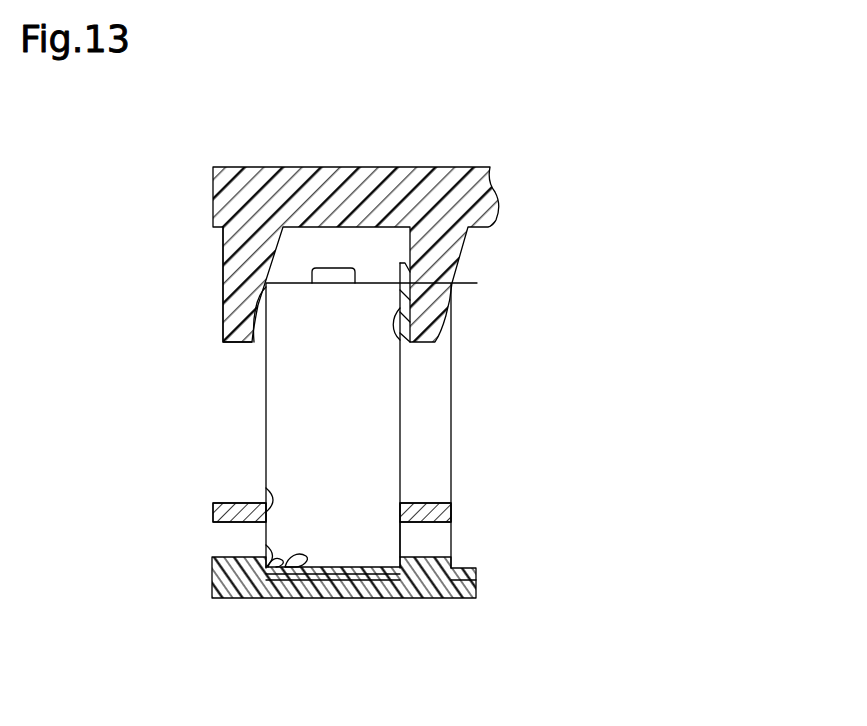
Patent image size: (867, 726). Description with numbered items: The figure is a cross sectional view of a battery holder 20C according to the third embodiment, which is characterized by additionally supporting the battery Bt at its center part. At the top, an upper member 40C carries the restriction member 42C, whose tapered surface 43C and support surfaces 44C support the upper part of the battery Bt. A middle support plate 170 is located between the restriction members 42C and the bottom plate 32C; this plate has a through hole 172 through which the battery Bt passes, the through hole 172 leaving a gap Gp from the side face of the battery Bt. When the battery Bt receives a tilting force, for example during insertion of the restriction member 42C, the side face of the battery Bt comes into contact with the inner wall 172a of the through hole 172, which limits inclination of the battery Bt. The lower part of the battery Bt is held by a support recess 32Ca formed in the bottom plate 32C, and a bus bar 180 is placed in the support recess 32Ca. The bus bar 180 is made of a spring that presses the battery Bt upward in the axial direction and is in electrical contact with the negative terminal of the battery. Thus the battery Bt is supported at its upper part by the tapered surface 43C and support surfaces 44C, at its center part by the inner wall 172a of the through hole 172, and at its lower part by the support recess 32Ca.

The battery holder 20C is at (553, 187).
The cap member 40C is at (455, 167).
The restriction member 42C is at (223, 280).
The tapered surface 43C is at (257, 333).
The support surfaces 44C is at (400, 340).
The battery Bt is at (400, 415).
The inner wall of the through hole 172a is at (273, 497).
The through hole 172 is at (407, 503).
The middle support plate 170 is at (443, 508).
The gap Gp is at (400, 520).
The support recess 32Ca is at (266, 548).
The bottom plate 32C is at (212, 580).
The bus bar 180 is at (263, 597).